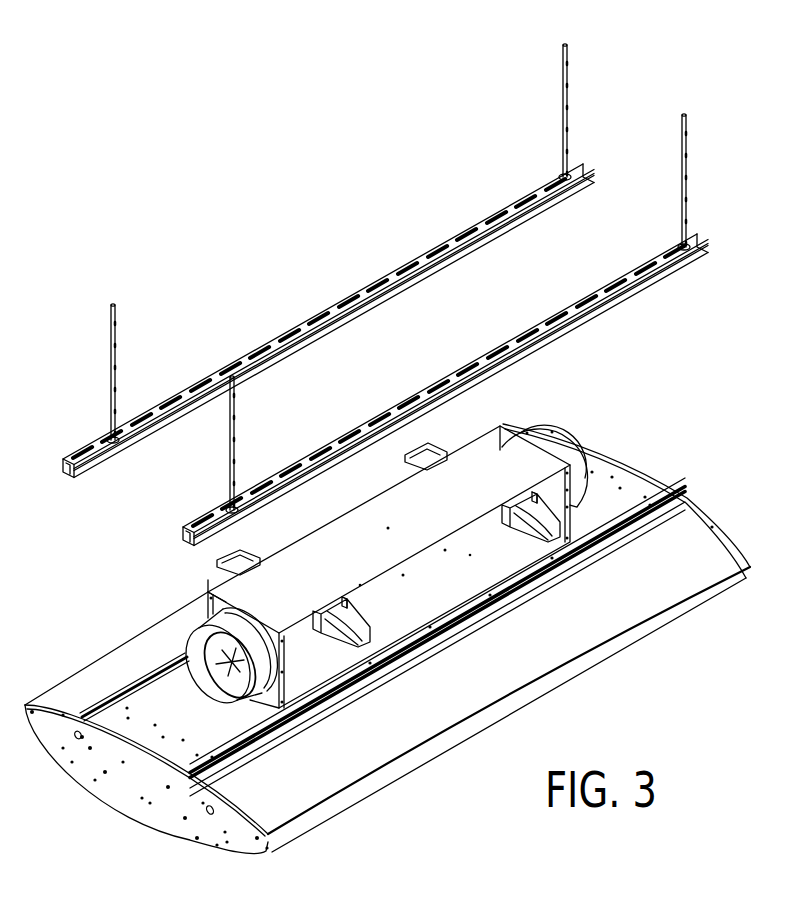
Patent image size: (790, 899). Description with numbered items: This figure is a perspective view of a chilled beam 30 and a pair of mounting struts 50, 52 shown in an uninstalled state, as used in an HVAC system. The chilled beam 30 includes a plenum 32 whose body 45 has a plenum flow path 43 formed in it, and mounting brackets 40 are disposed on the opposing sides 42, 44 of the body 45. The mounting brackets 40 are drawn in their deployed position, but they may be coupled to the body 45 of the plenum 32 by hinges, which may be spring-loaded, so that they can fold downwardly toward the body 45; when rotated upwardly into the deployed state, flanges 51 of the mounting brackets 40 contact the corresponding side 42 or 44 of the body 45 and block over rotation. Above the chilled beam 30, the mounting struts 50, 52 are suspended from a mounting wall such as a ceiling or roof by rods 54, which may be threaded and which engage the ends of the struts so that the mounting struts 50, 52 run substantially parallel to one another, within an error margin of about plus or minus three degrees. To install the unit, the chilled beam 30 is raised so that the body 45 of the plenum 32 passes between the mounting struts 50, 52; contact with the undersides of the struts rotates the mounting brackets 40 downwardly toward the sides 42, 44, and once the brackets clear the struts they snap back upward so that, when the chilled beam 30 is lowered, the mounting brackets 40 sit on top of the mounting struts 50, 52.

The chilled beam 30 is at (617, 672).
The plenum 32 is at (317, 664).
The mounting brackets 40 is at (442, 444).
The side 42 is at (450, 590).
The plenum flow path 43 is at (188, 664).
The side 44 is at (215, 574).
The body 45 is at (540, 424).
The mounting strut 50 is at (338, 301).
The flanges 51 is at (507, 507).
The mounting strut 52 is at (456, 363).
The rods 54 is at (562, 80).